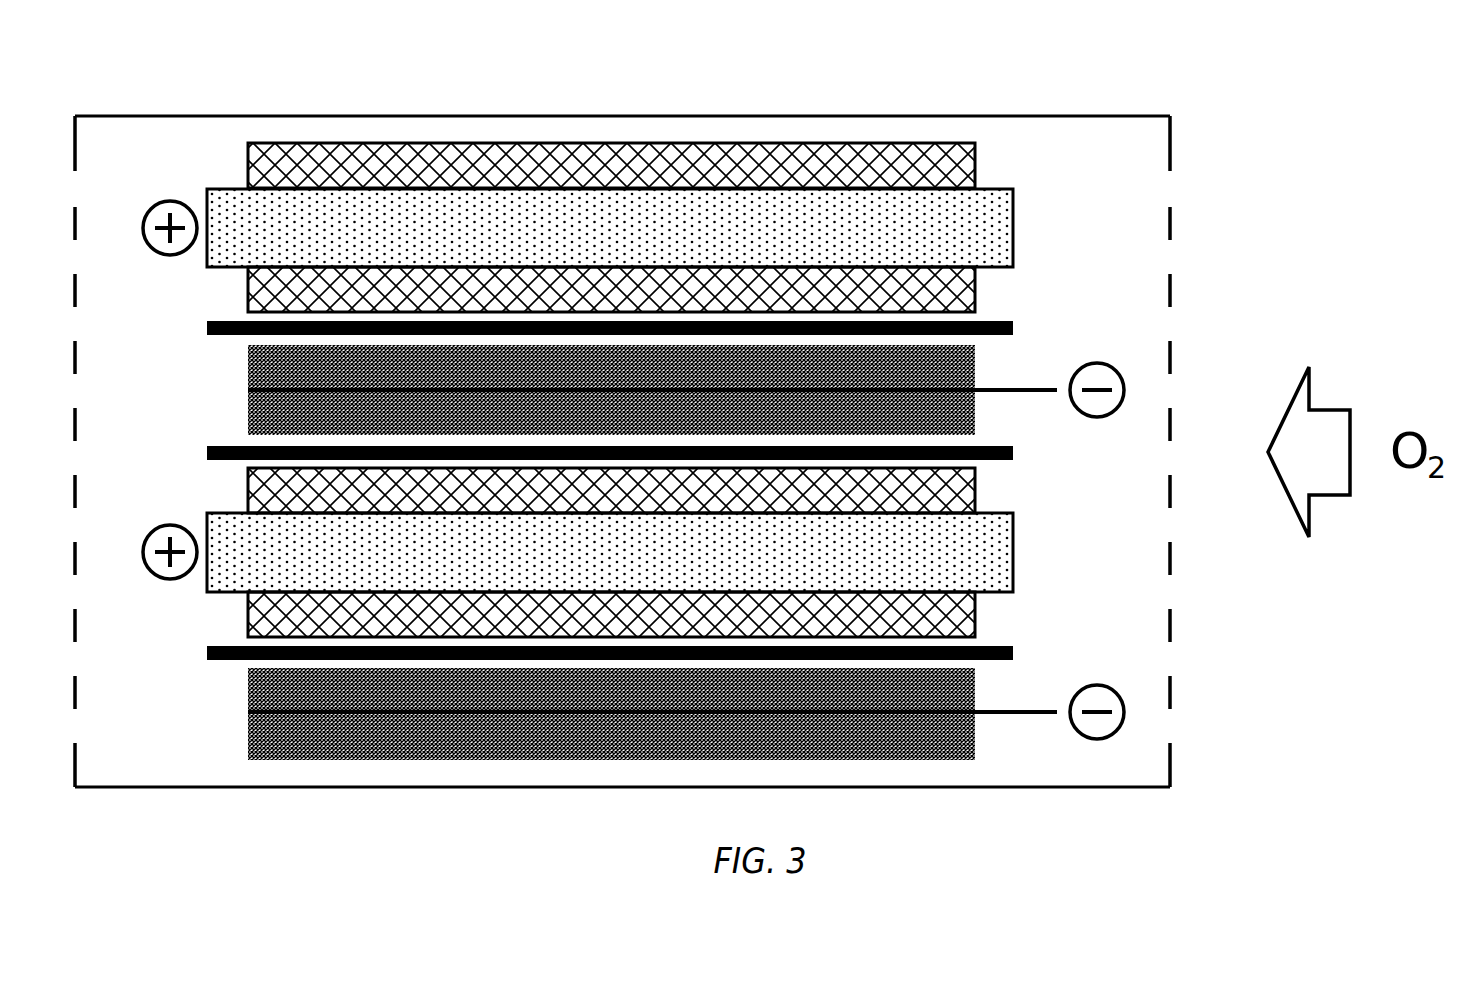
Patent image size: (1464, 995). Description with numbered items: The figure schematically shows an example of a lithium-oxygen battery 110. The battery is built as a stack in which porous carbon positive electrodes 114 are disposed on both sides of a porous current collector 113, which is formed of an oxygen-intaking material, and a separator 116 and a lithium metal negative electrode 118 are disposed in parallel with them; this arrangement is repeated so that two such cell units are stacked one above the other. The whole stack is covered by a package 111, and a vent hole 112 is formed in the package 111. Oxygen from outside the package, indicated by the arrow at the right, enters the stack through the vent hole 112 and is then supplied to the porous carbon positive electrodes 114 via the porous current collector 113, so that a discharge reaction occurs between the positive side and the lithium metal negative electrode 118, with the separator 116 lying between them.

The lithium-oxygen battery 110 is at (622, 407).
The package 111 is at (1120, 116).
The vent hole 112 is at (1172, 189).
The porous current collector 113 is at (997, 186).
The porous carbon positive electrode 114 is at (248, 171).
The separator 116 is at (207, 329).
The lithium metal negative electrode 118 is at (247, 375).